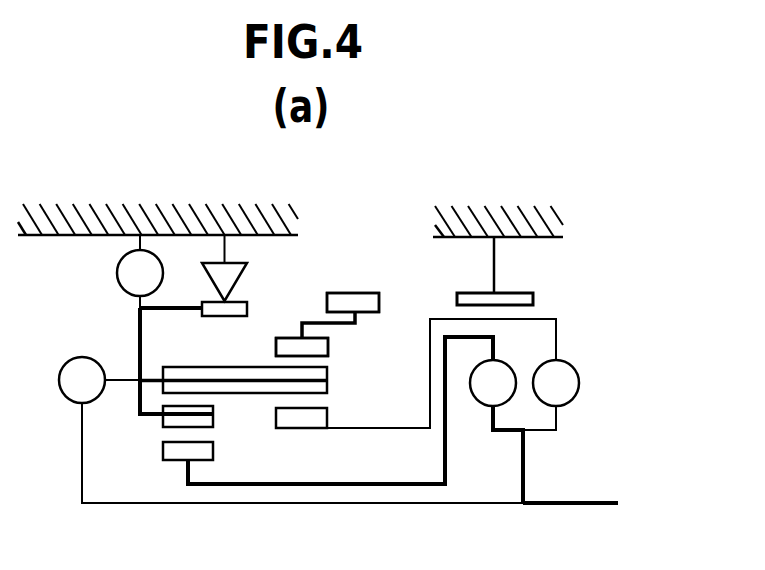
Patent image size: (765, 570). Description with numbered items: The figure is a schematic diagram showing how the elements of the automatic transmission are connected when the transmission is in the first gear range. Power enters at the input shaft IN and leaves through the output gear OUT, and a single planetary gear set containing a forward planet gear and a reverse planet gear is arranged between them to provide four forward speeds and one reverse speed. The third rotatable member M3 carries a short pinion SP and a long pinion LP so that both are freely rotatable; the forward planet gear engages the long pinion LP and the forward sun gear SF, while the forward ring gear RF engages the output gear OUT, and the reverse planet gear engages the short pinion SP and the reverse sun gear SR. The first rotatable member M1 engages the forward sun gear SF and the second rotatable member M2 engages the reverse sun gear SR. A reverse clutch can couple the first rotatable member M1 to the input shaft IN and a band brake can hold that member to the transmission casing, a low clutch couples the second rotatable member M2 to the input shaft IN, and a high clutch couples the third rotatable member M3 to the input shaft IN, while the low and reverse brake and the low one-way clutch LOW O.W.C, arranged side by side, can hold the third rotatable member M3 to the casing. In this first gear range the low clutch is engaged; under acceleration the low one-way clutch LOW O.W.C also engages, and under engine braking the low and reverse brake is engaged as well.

The third rotatable member M3 is at (156, 361).
The low one-way clutch LOW is at (253, 275).
The low one-way clutch O.W.C is at (331, 303).
The forward ring gear RF is at (322, 315).
The output gear OUT is at (329, 348).
The first rotatable member M1 is at (460, 373).
The second rotatable member M2 is at (340, 410).
The input shaft IN is at (570, 492).
The long pinion LP is at (254, 382).
The short pinion SP is at (168, 427).
The reverse sun gear SR is at (209, 451).
The forward sun gear SF is at (302, 432).